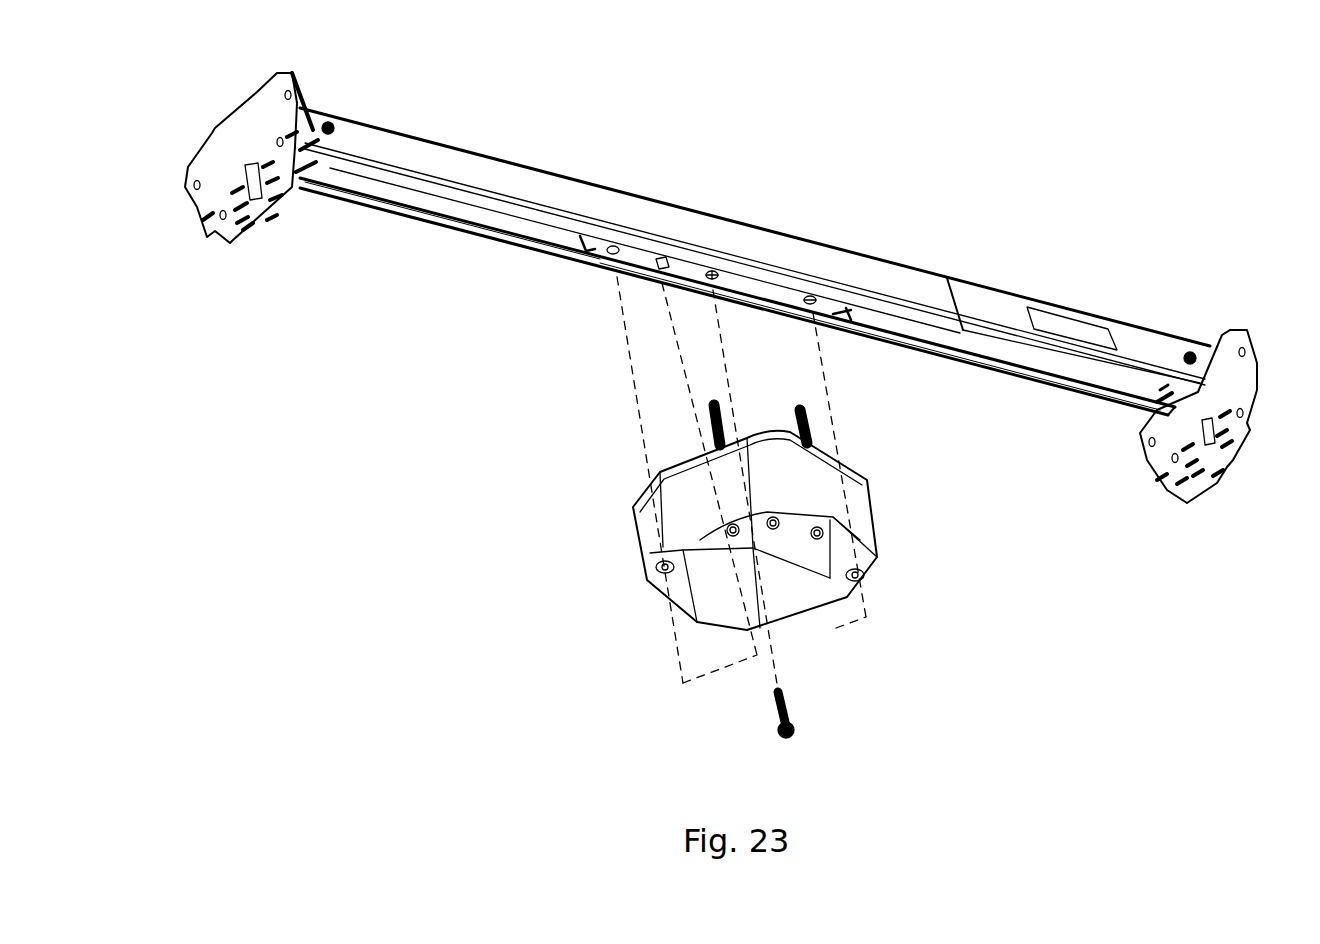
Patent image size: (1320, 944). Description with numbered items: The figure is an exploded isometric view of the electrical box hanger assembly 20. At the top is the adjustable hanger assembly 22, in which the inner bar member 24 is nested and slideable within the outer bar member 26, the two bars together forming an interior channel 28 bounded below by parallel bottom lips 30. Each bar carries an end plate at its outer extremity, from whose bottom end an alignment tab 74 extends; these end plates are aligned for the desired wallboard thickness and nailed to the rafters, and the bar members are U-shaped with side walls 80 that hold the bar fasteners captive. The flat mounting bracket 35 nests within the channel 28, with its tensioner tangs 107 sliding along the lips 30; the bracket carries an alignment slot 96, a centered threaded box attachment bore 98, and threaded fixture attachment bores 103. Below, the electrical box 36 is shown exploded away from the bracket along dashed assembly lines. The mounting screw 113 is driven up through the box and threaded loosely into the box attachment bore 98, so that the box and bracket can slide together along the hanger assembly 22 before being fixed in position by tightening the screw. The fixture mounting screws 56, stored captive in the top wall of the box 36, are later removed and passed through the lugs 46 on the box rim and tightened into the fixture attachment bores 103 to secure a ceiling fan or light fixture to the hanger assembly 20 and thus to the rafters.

The electrical box hanger assembly 20 is at (433, 460).
The adjustable hanger assembly 22 is at (767, 222).
The inner bar member 24 is at (1012, 290).
The outer bar member 26 is at (556, 182).
The interior channel 28 is at (1010, 357).
The bottom lips 30 is at (410, 218).
The mounting bracket 35 is at (763, 290).
The electrical box 36 is at (867, 493).
The lugs 46 is at (656, 575).
The fixture mounting screws 56 is at (840, 526).
The alignment tab 74 is at (1235, 475).
The side walls 80 is at (1157, 360).
The alignment slot 96 is at (661, 258).
The threaded box attachment bore 98 is at (712, 290).
The threaded fixture attachment bores 103 is at (812, 296).
The tensioner tang 107 is at (838, 318).
The mounting screw 113 is at (794, 704).